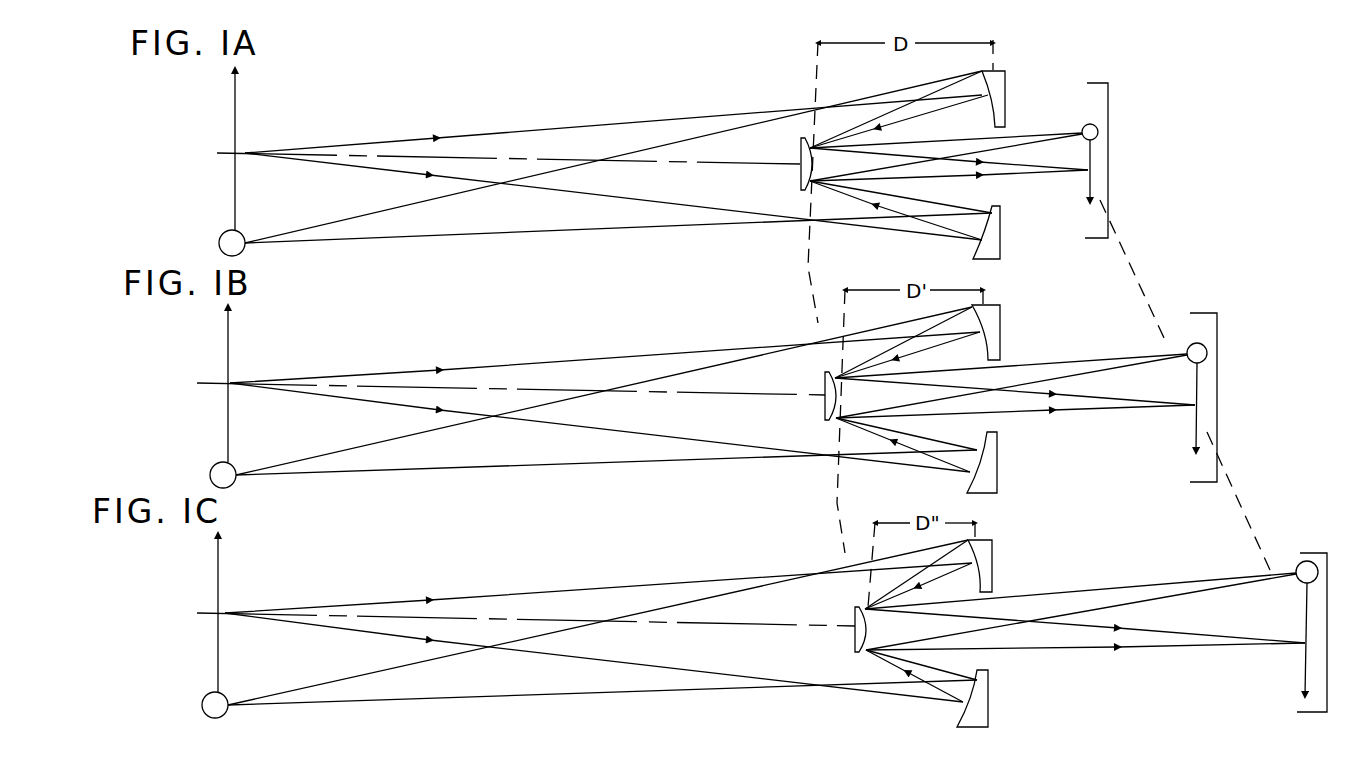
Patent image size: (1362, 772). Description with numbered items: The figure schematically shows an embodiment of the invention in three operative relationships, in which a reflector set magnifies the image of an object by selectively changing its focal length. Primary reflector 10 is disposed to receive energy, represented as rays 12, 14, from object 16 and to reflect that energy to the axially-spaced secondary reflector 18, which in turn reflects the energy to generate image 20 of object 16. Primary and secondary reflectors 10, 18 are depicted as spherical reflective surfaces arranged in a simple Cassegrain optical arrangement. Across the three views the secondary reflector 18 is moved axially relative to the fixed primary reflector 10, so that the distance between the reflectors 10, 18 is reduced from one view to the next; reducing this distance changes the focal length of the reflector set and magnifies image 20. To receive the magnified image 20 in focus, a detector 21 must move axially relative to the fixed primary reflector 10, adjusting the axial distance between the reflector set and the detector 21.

In FIG. 1A, the primary reflector 10 is at (998, 78).
In FIG. 1B, the primary reflector 10 is at (992, 320).
In FIG. 1C, the primary reflector 10 is at (983, 553).
In FIG. 1A, the ray 12 is at (515, 132).
In FIG. 1A, the ray 14 is at (512, 232).
In FIG. 1A, the object 16 is at (235, 110).
In FIG. 1B, the object 16 is at (228, 340).
In FIG. 1C, the object 16 is at (218, 568).
In FIG. 1A, the secondary reflector 18 is at (800, 172).
In FIG. 1B, the secondary reflector 18 is at (824, 387).
In FIG. 1C, the secondary reflector 18 is at (853, 615).
In FIG. 1A, the image 20 is at (1084, 183).
In FIG. 1B, the image 20 is at (1195, 427).
In FIG. 1C, the image 20 is at (1301, 668).
In FIG. 1A, the detector 21 is at (1108, 115).
In FIG. 1B, the detector 21 is at (1217, 337).
In FIG. 1C, the detector 21 is at (1328, 552).